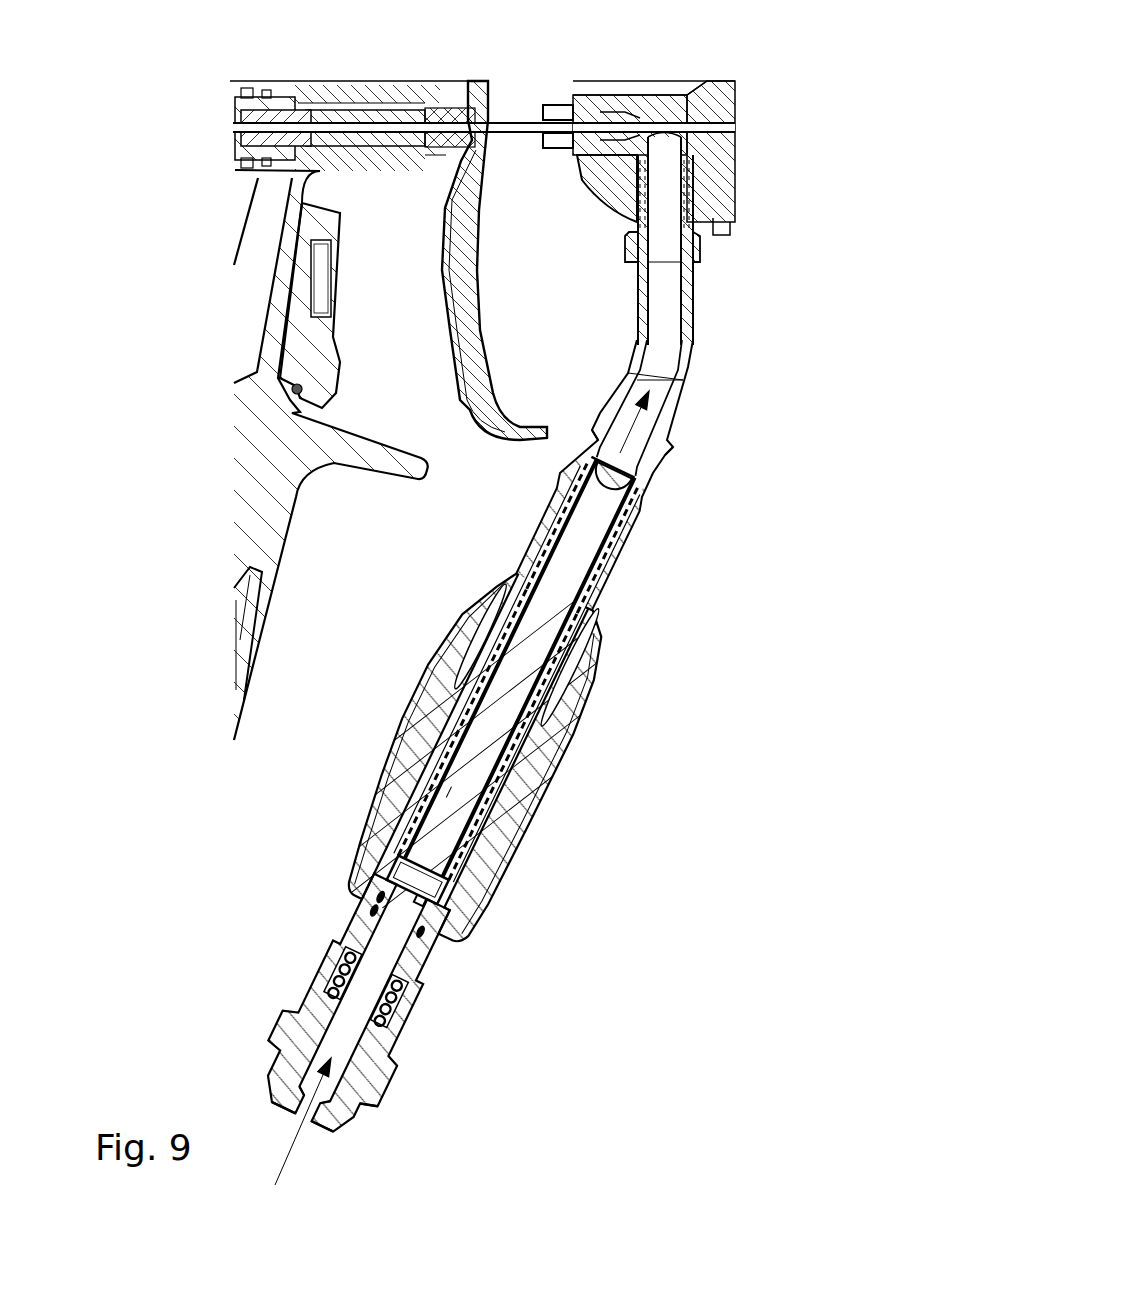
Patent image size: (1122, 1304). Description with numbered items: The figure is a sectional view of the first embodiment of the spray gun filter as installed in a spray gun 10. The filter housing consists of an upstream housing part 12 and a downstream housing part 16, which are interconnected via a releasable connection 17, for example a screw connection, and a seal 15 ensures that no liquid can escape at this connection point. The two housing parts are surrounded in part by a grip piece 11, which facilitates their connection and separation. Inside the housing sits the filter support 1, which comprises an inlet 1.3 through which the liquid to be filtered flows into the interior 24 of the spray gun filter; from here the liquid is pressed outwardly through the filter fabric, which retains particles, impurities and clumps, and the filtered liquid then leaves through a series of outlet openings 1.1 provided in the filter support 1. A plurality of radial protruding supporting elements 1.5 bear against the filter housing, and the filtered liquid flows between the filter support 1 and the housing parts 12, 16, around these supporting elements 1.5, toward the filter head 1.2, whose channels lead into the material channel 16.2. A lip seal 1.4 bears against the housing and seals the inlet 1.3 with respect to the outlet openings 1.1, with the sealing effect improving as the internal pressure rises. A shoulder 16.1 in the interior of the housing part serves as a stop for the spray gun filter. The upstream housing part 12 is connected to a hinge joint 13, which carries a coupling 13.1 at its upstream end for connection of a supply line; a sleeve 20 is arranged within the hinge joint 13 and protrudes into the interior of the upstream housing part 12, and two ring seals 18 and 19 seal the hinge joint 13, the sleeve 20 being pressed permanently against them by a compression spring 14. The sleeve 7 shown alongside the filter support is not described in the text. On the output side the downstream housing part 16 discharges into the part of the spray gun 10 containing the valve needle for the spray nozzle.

The filter support 1 is at (493, 797).
The outlet openings 1.1 is at (507, 763).
The filter head 1.2 is at (608, 487).
The inlet 1.3 is at (423, 900).
The seal 1.4 is at (440, 897).
The radial protruding supporting elements 1.5 is at (557, 523).
The sleeve 7 is at (543, 547).
The spray gun 10 is at (752, 583).
The grip piece 11 is at (470, 867).
The upstream housing part 12 is at (407, 1010).
The hinge joint 13 is at (387, 1090).
The coupling 13.1 is at (347, 1117).
The compression spring 14 is at (403, 1047).
The seal 15 is at (587, 627).
The downstream housing part 16 is at (613, 553).
The shoulder 16.1 is at (665, 470).
The material channel 16.2 is at (668, 322).
The releasable connection 17 is at (587, 703).
The ring seal 18 is at (383, 900).
The ring seal 19 is at (377, 910).
The sleeve 20 is at (333, 1020).
The interior 24 is at (450, 790).